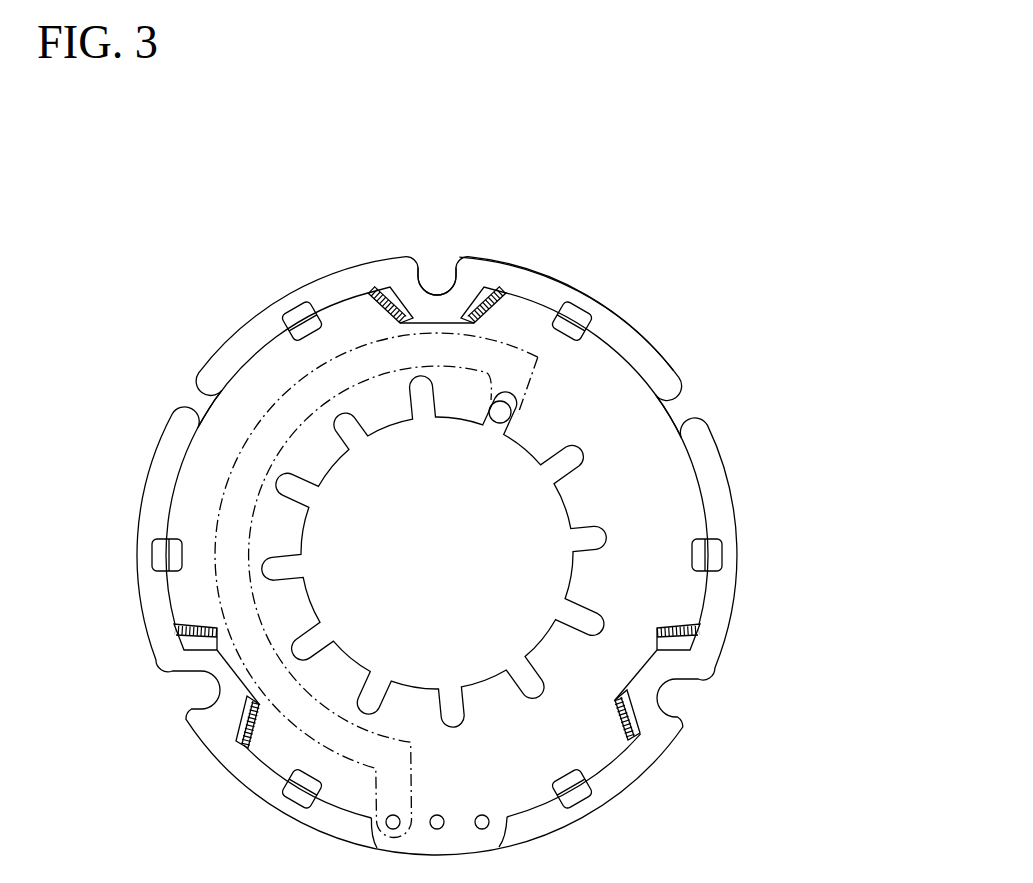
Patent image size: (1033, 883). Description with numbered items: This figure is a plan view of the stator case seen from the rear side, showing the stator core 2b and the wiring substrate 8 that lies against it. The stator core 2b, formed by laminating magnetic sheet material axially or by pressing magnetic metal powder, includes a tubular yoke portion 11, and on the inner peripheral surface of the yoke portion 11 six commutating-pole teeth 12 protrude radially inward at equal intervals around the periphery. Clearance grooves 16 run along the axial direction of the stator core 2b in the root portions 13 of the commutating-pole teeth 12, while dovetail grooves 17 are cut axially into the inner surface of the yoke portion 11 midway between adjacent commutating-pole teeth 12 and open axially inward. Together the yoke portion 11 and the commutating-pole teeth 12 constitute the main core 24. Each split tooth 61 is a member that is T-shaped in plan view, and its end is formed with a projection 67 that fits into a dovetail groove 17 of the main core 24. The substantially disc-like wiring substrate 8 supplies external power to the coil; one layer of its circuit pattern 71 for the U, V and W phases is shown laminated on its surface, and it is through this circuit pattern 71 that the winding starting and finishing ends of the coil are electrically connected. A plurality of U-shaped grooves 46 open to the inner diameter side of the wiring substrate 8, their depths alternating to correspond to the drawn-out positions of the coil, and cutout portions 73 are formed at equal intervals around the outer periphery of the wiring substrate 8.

The stator core 2b is at (733, 438).
The wiring substrate 8 is at (697, 593).
The yoke portion 11 is at (650, 346).
The commutating-pole teeth 12 is at (413, 293).
The root portions 13 is at (391, 240).
The clearance grooves 16 is at (450, 270).
The dovetail grooves 17 is at (541, 302).
The main core 24 is at (508, 556).
The U-shaped grooves 46 is at (322, 640).
The split tooth 61 is at (563, 312).
The projection 67 is at (625, 283).
The circuit pattern 71 is at (270, 428).
The cutout portions 73 is at (157, 551).